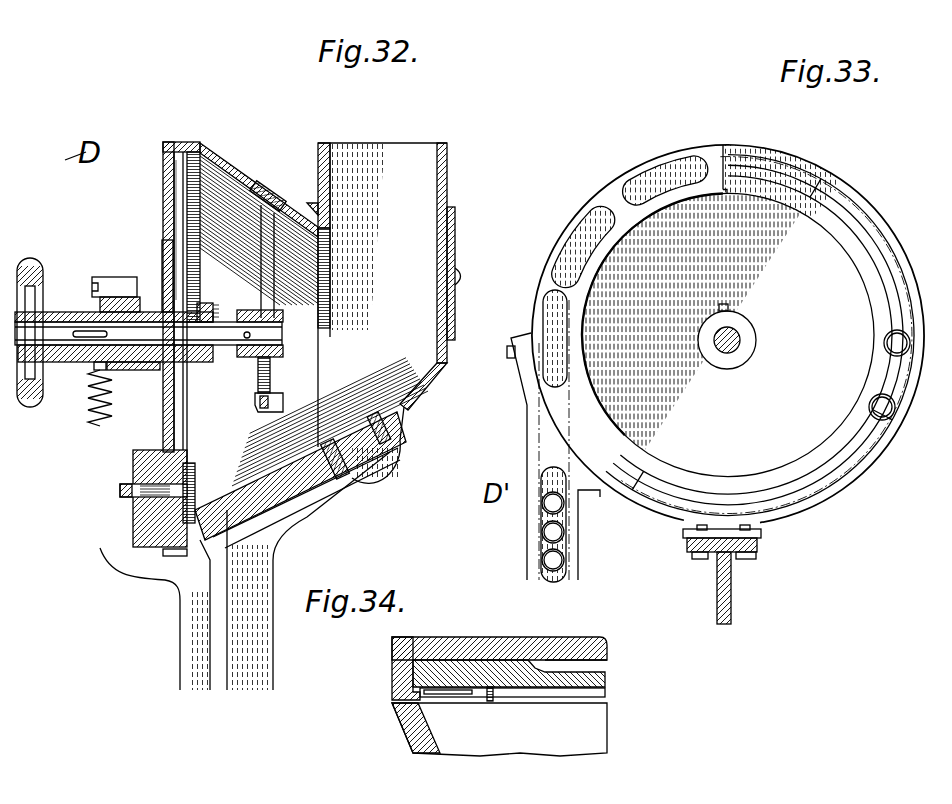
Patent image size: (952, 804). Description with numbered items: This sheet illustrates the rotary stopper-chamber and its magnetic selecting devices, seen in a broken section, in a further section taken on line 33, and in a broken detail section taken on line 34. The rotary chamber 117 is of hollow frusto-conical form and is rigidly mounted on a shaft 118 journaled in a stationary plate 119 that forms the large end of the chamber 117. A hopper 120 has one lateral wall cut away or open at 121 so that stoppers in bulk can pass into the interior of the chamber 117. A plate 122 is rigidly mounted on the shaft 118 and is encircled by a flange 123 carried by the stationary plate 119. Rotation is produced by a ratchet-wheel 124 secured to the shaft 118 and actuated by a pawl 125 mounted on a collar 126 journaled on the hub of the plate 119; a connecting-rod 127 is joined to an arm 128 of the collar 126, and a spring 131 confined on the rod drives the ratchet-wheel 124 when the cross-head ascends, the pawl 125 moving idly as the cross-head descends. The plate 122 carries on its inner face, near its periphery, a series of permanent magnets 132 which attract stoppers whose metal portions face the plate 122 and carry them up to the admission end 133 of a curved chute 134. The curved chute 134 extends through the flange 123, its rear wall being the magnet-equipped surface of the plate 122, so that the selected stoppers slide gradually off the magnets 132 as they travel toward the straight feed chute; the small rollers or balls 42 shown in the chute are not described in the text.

In FIG. 32, the section line 33 is at (198, 142).
In FIG. 33, the section line 34 is at (628, 284).
In FIG. 33, the balls 42 is at (892, 342).
In FIG. 32, the rotary chamber 117 is at (263, 192).
In FIG. 34, the rotary chamber 117 is at (603, 733).
In FIG. 32, the shaft 118 is at (227, 341).
In FIG. 33, the shaft 118 is at (742, 343).
In FIG. 32, the stationary plate 119 is at (168, 190).
In FIG. 34, the stationary plate 119 is at (593, 640).
In FIG. 32, the hopper 120 is at (389, 313).
In FIG. 32, the open lateral wall portion 121 is at (320, 357).
In FIG. 32, the plate 122 is at (188, 285).
In FIG. 33, the plate 122 is at (728, 334).
In FIG. 32, the flange 123 is at (183, 141).
In FIG. 33, the flange 123 is at (659, 522).
In FIG. 34, the flange 123 is at (397, 675).
In FIG. 32, the ratchet-wheel 124 is at (92, 300).
In FIG. 32, the pawl 125 is at (128, 277).
In FIG. 32, the collar 126 is at (125, 370).
In FIG. 32, the connecting-rod 127 is at (97, 425).
In FIG. 32, the arm 128 is at (141, 296).
In FIG. 32, the spring 131 is at (96, 368).
In FIG. 32, the permanent magnets 132 is at (203, 150).
In FIG. 33, the permanent magnets 132 is at (888, 257).
In FIG. 33, the admission end 133 is at (718, 147).
In FIG. 33, the curved chute 134 is at (597, 195).
In FIG. 34, the curved chute 134 is at (488, 698).